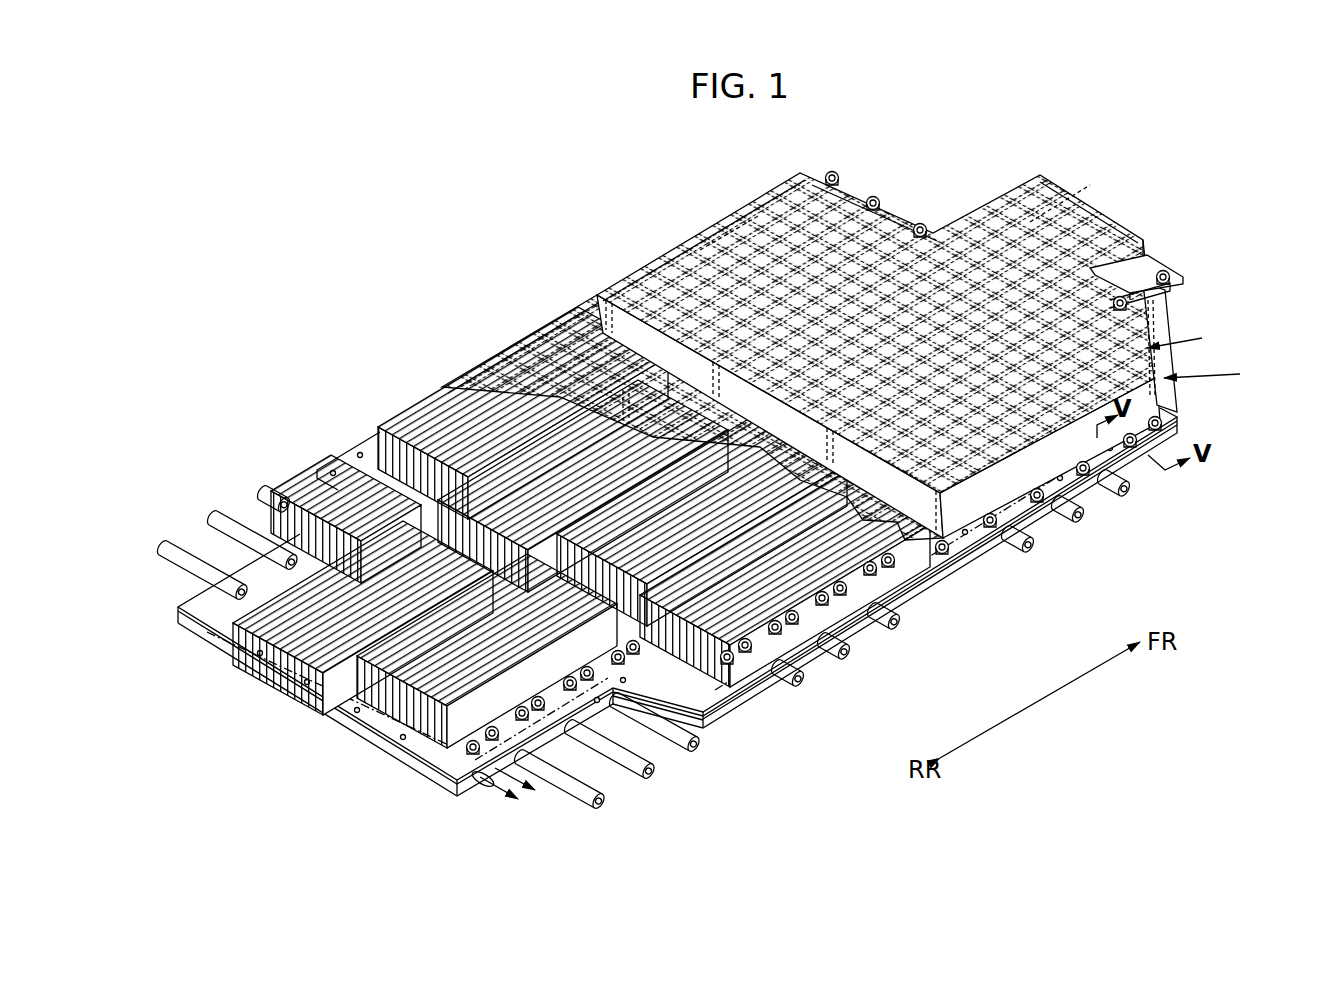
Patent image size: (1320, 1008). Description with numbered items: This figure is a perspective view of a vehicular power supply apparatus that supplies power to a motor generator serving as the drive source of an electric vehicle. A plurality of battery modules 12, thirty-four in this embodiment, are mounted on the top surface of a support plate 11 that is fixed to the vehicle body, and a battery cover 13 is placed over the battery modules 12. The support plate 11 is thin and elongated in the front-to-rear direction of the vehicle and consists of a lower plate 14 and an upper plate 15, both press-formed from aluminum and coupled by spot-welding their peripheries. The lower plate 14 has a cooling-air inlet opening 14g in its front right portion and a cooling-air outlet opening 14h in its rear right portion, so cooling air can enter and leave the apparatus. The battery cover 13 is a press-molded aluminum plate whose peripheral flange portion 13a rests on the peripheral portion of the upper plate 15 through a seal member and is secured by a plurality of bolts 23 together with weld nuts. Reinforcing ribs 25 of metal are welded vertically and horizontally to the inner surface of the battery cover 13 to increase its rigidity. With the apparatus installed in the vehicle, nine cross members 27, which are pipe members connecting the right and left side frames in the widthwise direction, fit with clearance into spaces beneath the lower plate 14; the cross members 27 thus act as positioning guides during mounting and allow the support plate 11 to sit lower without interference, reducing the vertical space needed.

The support plate 11 is at (723, 489).
The battery module 12 is at (432, 440).
The battery cover 13 is at (770, 184).
The flange portion 13a is at (1156, 268).
The lower plate 14 is at (731, 716).
The cooling-air inlet opening 14g is at (1178, 413).
The cooling-air outlet opening 14h is at (505, 790).
The upper plate 15 is at (763, 684).
The bolt 23 is at (921, 226).
The reinforcing rib 25 is at (715, 258).
The cross member 27 is at (695, 748).